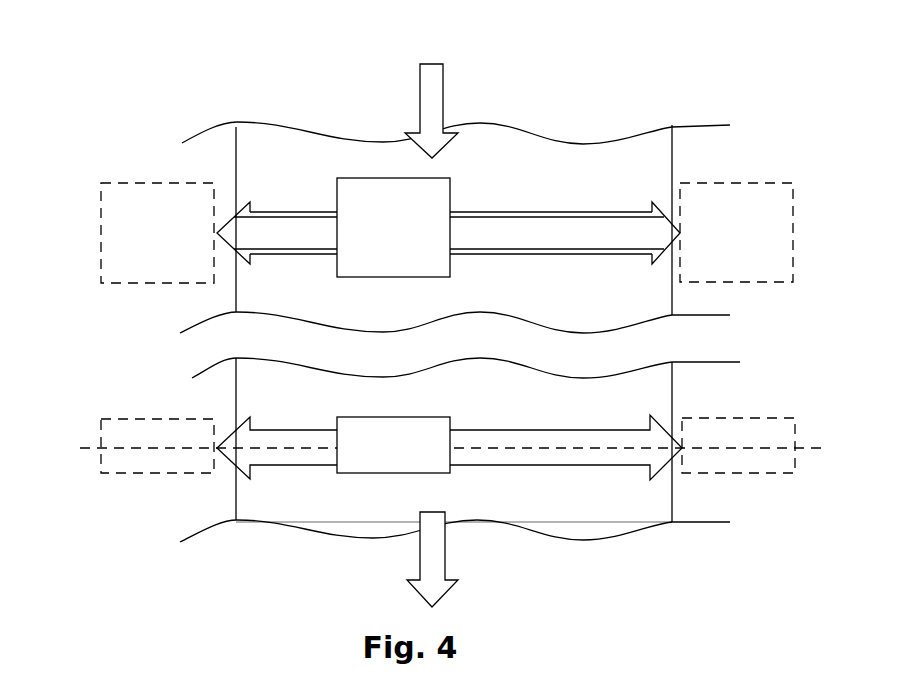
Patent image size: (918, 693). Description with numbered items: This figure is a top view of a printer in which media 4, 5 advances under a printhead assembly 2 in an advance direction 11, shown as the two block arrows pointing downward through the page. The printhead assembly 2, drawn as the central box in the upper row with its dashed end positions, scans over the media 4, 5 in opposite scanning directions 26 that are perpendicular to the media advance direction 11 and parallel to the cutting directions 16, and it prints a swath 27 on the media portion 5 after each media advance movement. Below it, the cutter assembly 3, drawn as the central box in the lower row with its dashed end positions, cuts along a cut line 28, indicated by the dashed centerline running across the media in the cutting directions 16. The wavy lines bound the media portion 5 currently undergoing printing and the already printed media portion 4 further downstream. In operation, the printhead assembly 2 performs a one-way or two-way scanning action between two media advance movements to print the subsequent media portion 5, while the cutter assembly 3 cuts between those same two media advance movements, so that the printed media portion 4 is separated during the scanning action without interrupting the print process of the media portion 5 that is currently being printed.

The printhead assembly 2 is at (447, 230).
The cutter assembly 3 is at (454, 445).
The printed media portion 4 is at (267, 498).
The media portion 5 is at (287, 153).
The advance direction 11 is at (435, 91).
The cutting directions 16 is at (242, 440).
The scanning directions 26 is at (248, 228).
The swath 27 is at (611, 211).
The cut line 28 is at (610, 450).